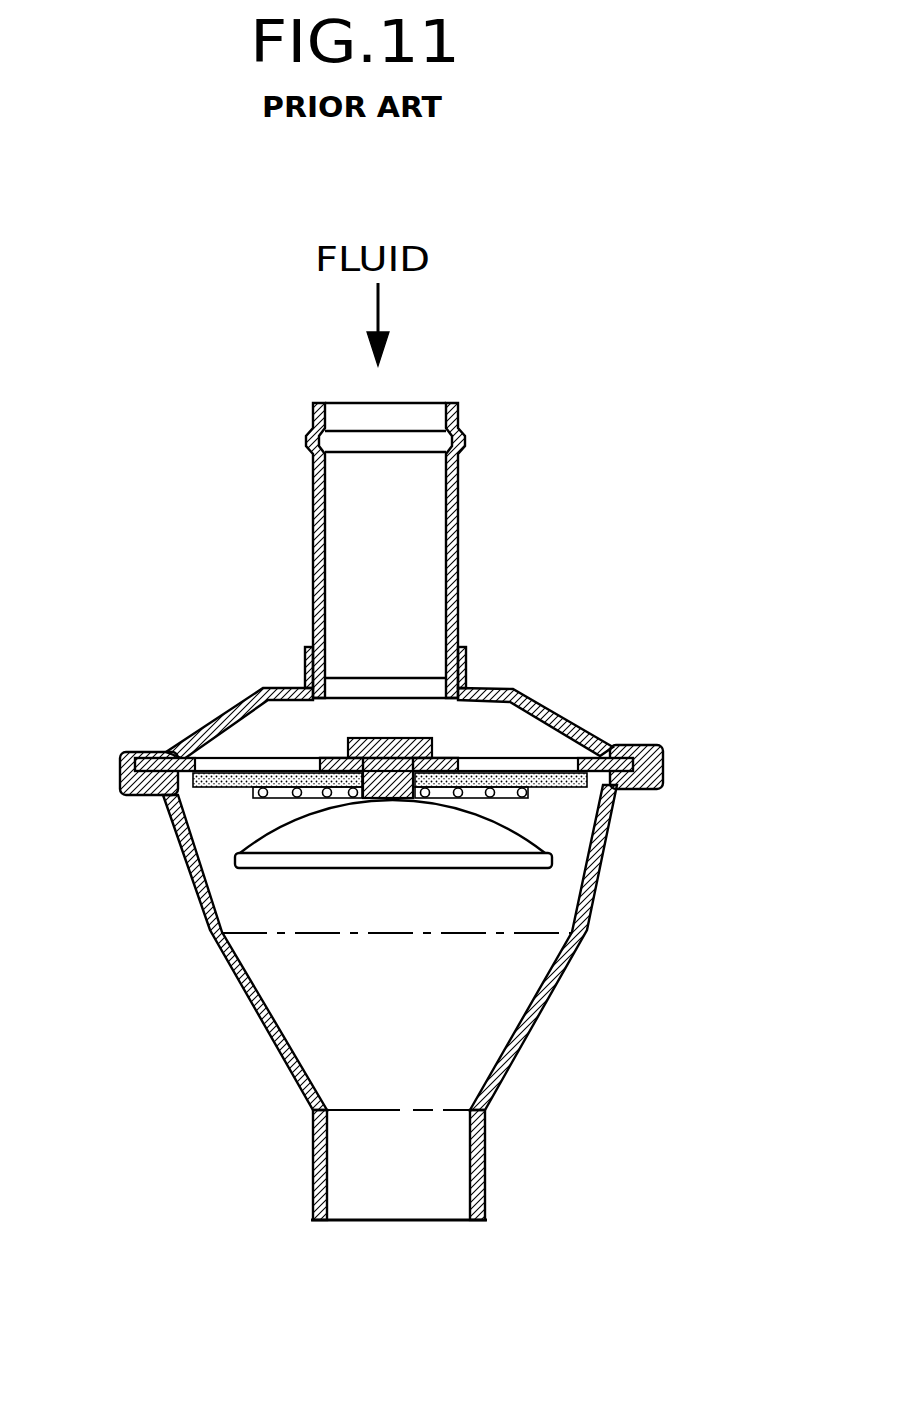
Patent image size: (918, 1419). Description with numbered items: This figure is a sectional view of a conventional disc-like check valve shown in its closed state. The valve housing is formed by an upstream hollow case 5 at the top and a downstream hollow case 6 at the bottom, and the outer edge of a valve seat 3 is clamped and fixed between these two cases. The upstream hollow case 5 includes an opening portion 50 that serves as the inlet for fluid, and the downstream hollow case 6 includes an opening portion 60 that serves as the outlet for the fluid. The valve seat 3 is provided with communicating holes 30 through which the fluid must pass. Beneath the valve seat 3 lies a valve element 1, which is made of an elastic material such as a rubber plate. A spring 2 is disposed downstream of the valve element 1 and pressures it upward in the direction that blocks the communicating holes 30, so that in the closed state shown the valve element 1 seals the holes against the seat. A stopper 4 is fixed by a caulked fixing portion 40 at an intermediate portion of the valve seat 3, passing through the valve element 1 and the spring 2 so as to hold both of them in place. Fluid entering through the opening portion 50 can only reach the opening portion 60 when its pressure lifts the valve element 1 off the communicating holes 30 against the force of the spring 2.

The valve element 1 is at (225, 785).
The spring 2 is at (255, 797).
The valve seat 3 is at (330, 757).
The stopper 4 is at (353, 855).
The upstream hollow case 5 is at (462, 570).
The downstream hollow case 6 is at (545, 1003).
The communicating hole 30 is at (520, 763).
The caulked fixing portion 40 is at (300, 686).
The opening portion 50 is at (418, 403).
The opening portion 60 is at (412, 1222).